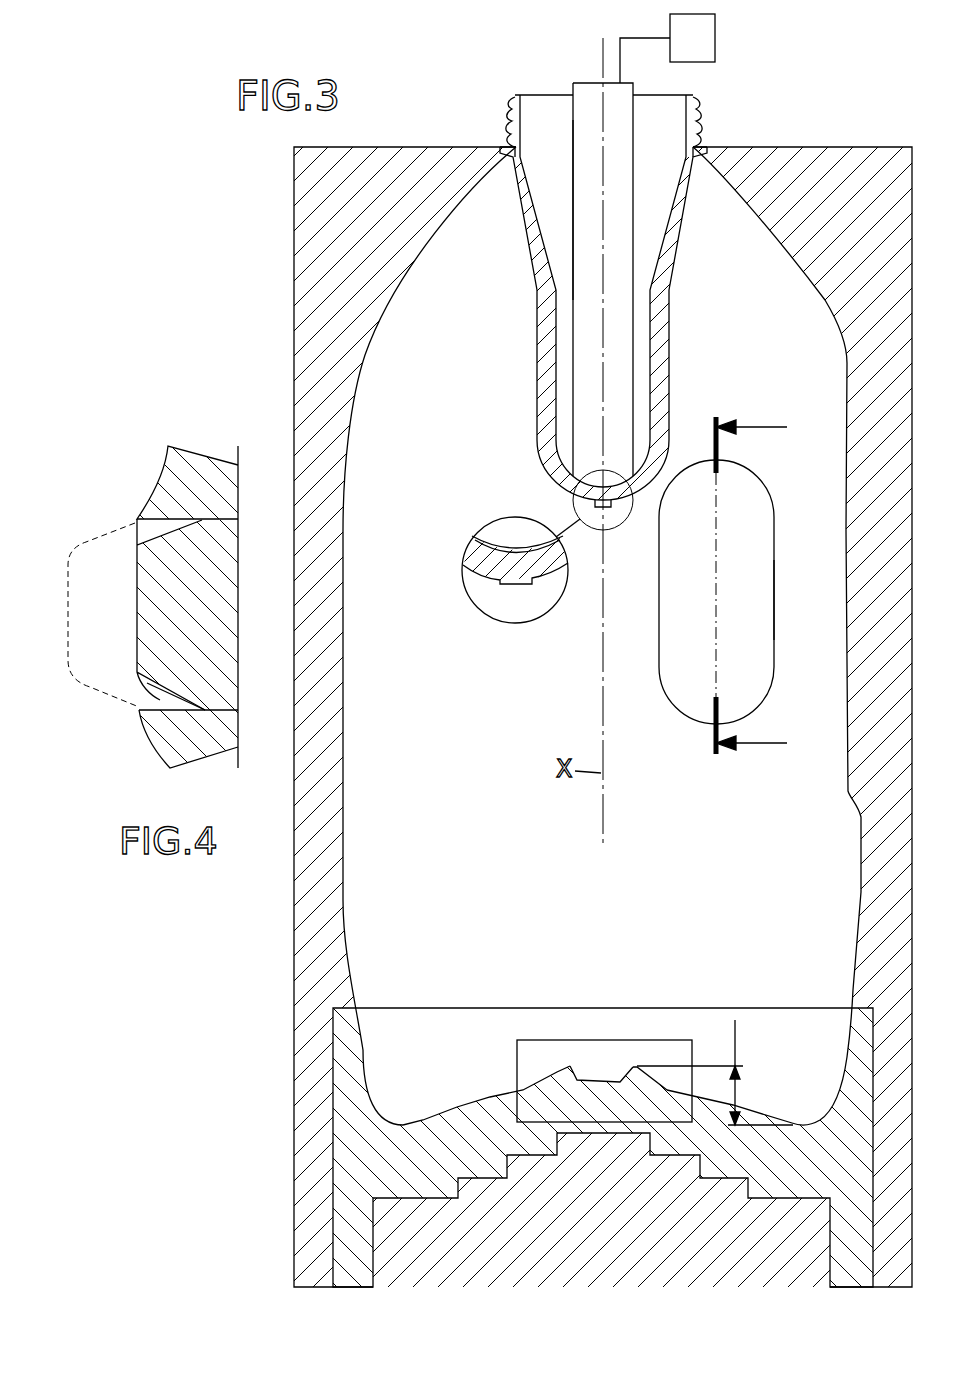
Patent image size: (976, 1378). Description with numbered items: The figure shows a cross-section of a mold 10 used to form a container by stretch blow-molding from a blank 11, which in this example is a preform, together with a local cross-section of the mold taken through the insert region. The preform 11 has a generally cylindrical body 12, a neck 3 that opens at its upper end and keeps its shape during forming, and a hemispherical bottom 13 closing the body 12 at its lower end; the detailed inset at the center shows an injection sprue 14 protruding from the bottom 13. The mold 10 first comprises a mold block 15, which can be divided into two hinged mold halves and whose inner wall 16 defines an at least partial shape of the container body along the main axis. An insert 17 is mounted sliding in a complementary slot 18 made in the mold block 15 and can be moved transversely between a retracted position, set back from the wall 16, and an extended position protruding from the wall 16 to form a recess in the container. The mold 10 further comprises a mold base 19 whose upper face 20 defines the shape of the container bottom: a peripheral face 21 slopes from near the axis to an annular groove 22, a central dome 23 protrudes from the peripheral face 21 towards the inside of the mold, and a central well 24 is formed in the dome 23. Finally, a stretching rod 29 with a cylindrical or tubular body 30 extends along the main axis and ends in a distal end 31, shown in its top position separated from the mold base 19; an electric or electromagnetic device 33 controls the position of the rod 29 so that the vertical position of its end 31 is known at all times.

In FIG. 3, the neck 3 is at (698, 122).
In FIG. 3, the mold 10 is at (562, 717).
In FIG. 3, the blank 11 is at (513, 103).
In FIG. 3, the body 12 is at (575, 357).
In FIG. 3, the hemispherical bottom 13 is at (547, 463).
In FIG. 3, the injection sprue 14 is at (515, 583).
In FIG. 3, the mold block 15 is at (303, 350).
In FIG. 3, the inner wall 16 is at (348, 455).
In FIG. 3, the insert 17 is at (759, 583).
In FIG. 4, the insert 17 is at (93, 535).
In FIG. 3, the complementary slot 18 is at (776, 638).
In FIG. 4, the complementary slot 18 is at (161, 708).
In FIG. 3, the mold base 19 is at (447, 1193).
In FIG. 3, the upper face 20 is at (616, 1068).
In FIG. 3, the peripheral face 21 is at (438, 1112).
In FIG. 3, the annular groove 22 is at (793, 1122).
In FIG. 3, the central dome 23 is at (563, 1073).
In FIG. 3, the central well 24 is at (620, 1070).
In FIG. 3, the stretching rod 29 is at (618, 167).
In FIG. 3, the cylindrical or tubular body 30 is at (582, 197).
In FIG. 3, the distal end 31 is at (497, 537).
In FIG. 3, the electric or electromagnetic device 33 is at (667, 48).